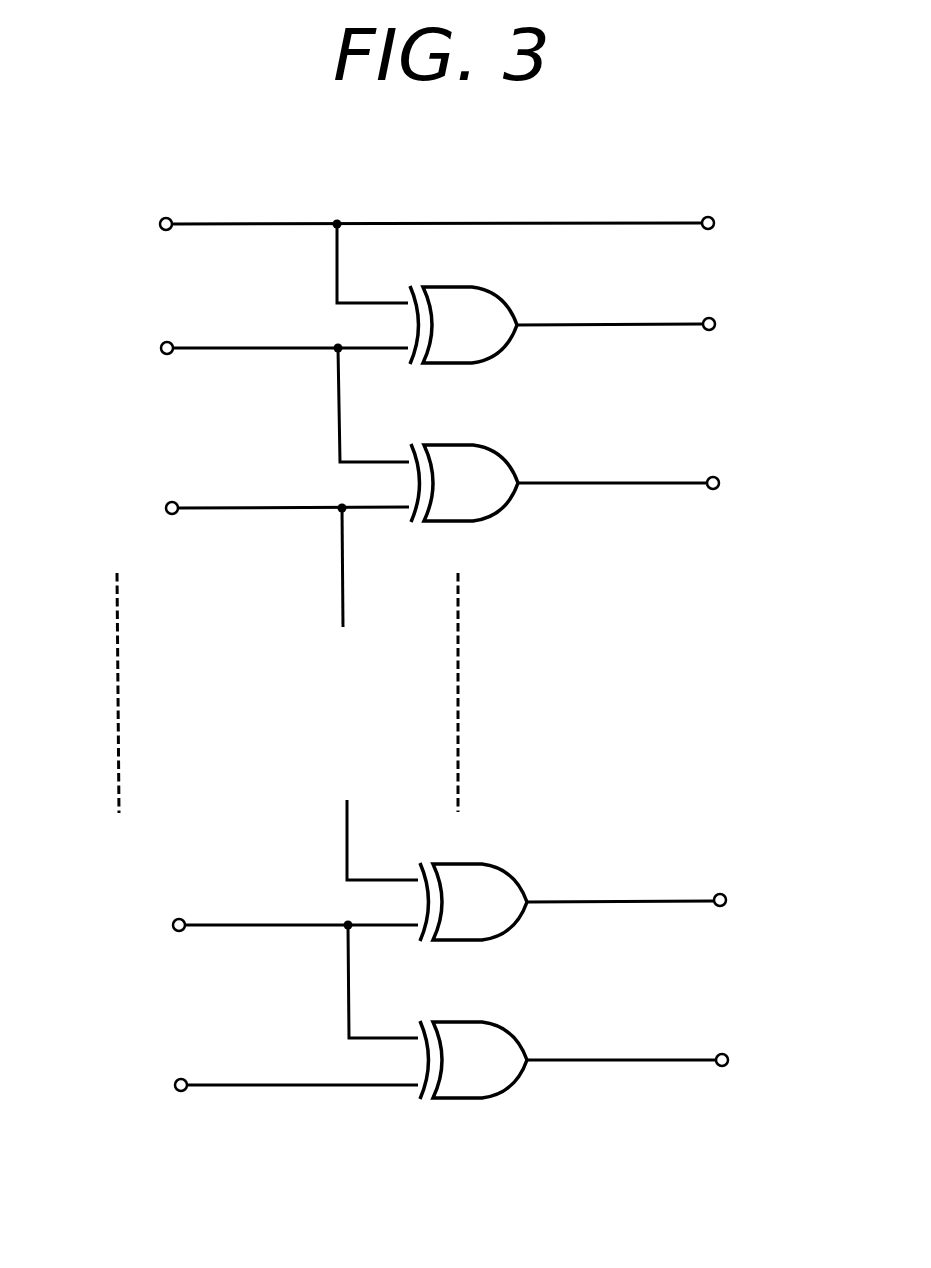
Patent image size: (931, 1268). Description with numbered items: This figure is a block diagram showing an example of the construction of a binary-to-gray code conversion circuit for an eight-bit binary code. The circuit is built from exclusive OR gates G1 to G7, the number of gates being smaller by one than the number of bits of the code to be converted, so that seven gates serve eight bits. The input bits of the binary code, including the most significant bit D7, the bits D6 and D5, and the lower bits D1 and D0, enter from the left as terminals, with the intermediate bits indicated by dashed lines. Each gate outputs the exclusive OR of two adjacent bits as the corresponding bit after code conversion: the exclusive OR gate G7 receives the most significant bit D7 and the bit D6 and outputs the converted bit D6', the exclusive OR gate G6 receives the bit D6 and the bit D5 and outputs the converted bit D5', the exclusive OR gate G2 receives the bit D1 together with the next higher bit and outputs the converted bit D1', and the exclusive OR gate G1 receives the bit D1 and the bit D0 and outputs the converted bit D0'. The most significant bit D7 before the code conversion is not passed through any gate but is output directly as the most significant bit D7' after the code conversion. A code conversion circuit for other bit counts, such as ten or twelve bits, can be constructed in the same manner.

The exclusive OR gate G7 is at (484, 293).
The exclusive OR gate G6 is at (486, 450).
The exclusive OR gate G2 is at (493, 869).
The exclusive OR gate G1 is at (493, 1027).
The most significant bit D7 is at (438, 225).
The bit D6 is at (439, 338).
The bit D5 is at (443, 498).
The bit D1 is at (449, 915).
The bit D0 is at (451, 1075).